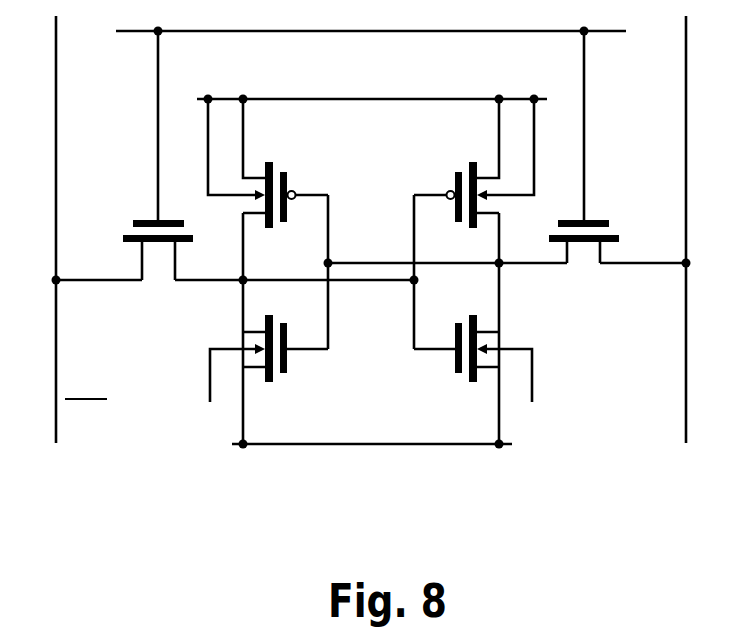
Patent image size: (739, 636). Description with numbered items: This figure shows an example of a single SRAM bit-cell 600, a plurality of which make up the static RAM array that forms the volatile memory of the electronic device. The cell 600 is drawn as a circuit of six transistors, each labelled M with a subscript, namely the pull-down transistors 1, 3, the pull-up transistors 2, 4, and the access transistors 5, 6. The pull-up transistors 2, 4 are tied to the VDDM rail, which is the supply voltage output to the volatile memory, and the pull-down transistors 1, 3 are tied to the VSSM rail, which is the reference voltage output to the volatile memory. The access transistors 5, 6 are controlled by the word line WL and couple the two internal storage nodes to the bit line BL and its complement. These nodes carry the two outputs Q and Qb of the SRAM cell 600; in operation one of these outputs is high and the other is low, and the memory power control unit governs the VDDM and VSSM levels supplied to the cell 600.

The SRAM bit-cell 600 is at (371, 281).
The pull-down transistor M1 1 is at (269, 369).
The pull-up transistor M2 2 is at (272, 163).
The pull-down transistor M3 3 is at (473, 369).
The pull-up transistor M4 4 is at (468, 163).
The access transistor M5 5 is at (138, 155).
The access transistor M6 6 is at (599, 147).